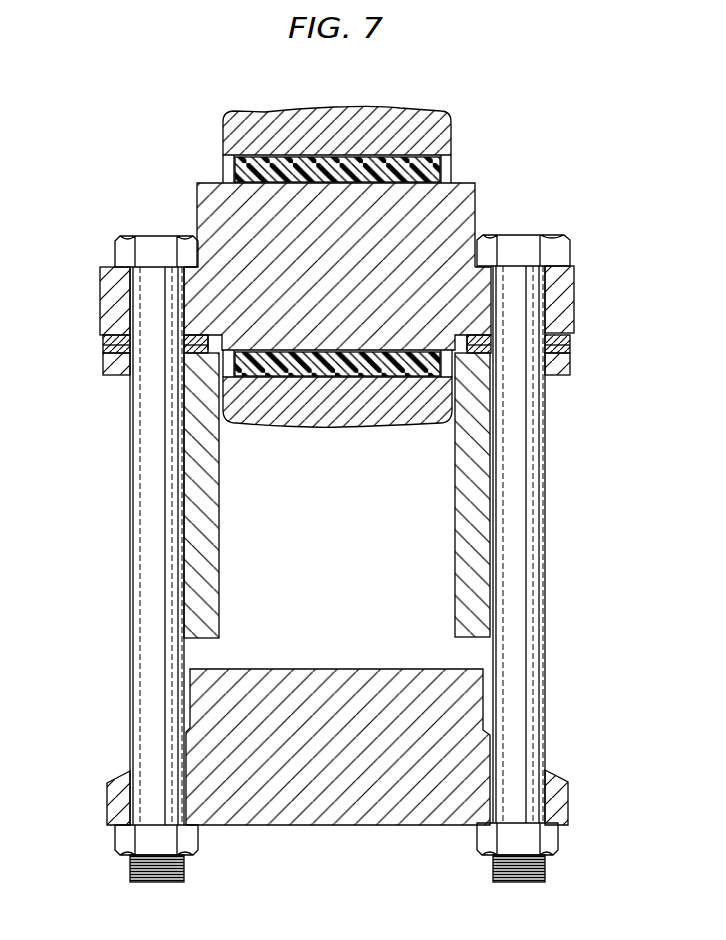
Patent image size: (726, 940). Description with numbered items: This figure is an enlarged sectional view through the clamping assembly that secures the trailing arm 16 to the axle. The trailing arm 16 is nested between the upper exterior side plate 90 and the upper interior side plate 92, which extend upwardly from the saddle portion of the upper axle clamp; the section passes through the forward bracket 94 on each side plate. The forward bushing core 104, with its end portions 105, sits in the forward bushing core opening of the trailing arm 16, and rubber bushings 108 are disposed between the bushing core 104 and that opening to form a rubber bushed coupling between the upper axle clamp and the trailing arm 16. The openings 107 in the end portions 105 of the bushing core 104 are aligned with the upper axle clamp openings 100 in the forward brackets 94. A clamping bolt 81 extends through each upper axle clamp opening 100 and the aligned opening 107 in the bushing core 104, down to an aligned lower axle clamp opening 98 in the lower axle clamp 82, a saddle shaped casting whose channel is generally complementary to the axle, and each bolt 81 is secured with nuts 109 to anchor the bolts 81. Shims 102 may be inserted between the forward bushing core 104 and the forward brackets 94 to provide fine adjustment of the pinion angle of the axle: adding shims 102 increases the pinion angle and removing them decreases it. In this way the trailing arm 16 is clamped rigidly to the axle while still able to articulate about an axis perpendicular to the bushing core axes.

The trailing arm 16 is at (301, 130).
The rubber bushings 108 is at (403, 173).
The forward bushing core 104 is at (450, 213).
The shims 102 is at (568, 337).
The end portions 105 is at (115, 308).
The openings 107 is at (118, 278).
The forward bracket 94 is at (105, 365).
The upper axle clamp openings 100 is at (122, 367).
The clamping bolts 81 is at (147, 500).
The upper exterior side plate 90 is at (200, 571).
The upper interior side plate 92 is at (473, 577).
The lower axle clamp 82 is at (440, 710).
The lower axle clamp opening 98 is at (129, 772).
The nuts 109 is at (187, 833).